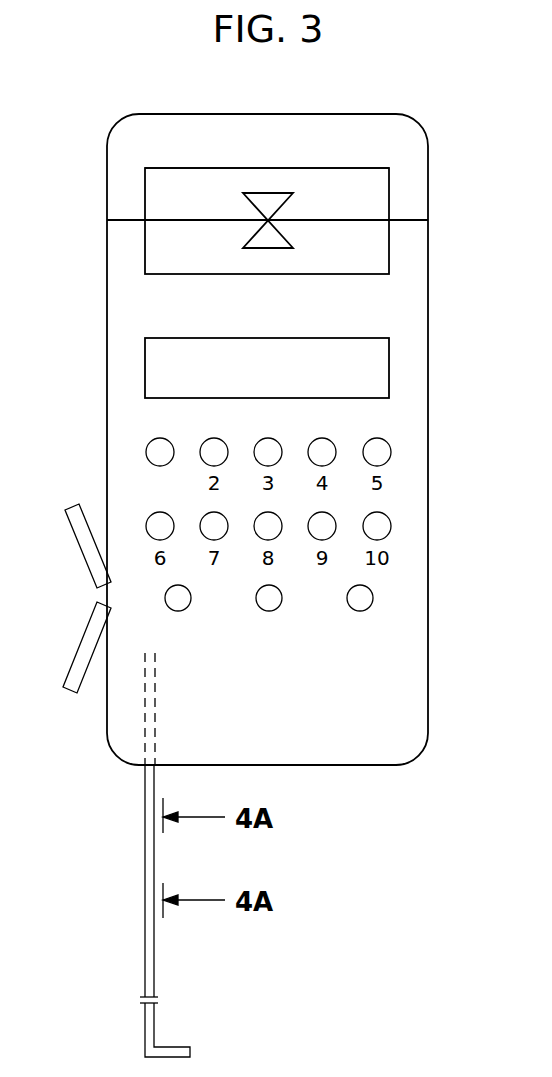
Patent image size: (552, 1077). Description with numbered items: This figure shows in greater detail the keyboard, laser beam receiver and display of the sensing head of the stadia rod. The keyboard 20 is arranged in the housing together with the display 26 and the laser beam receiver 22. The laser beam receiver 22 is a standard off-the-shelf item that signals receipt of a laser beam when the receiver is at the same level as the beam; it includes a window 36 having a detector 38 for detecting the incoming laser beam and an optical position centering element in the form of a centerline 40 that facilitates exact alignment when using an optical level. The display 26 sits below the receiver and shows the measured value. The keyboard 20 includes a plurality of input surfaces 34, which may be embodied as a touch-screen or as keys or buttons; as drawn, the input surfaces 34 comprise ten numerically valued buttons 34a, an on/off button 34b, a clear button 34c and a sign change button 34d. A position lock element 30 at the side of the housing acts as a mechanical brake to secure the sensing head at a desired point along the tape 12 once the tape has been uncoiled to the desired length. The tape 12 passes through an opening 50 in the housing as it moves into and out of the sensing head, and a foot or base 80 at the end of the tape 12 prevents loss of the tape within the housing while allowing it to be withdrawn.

The keyboard 20 is at (410, 494).
The laser beam receiver 22 is at (160, 196).
The window 36 is at (375, 194).
The centerline 40 is at (362, 221).
The detector 38 is at (268, 193).
The display 26 is at (381, 373).
The input surfaces 34 is at (145, 433).
The numerically valued buttons 34a is at (378, 449).
The on/off button 34b is at (175, 600).
The clear button 34c is at (365, 597).
The sign change button 34d is at (265, 602).
The position lock element 30 is at (72, 508).
The opening 50 is at (143, 766).
The tape 12 is at (150, 801).
The foot or base 80 is at (176, 1048).